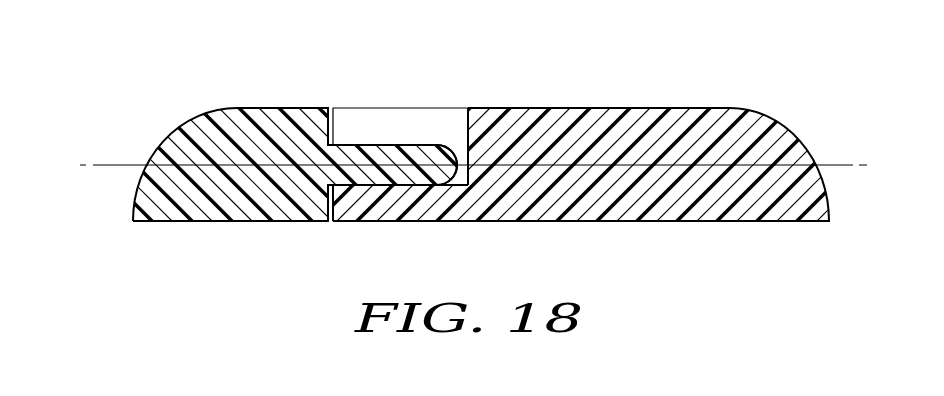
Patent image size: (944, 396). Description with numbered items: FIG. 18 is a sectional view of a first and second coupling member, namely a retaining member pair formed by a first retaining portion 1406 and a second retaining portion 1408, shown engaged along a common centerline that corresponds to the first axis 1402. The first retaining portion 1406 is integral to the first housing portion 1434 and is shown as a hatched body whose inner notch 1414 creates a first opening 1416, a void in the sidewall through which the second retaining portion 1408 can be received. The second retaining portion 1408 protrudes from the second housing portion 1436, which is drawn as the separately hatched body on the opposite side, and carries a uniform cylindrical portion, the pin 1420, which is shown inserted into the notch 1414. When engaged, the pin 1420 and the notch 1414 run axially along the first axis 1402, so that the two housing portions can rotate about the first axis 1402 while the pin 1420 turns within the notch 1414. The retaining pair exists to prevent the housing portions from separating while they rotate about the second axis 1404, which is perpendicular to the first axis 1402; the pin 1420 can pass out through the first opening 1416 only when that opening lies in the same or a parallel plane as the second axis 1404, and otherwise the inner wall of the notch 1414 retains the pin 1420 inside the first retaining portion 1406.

The first axis 1402 is at (113, 164).
The second axis 1404 is at (722, 165).
The first retaining portion 1406 is at (408, 192).
The second retaining portion 1408 is at (172, 143).
The notch 1414 is at (350, 117).
The first opening 1416 is at (453, 115).
The pin 1420 is at (408, 152).
The first housing portion 1434 is at (552, 108).
The second housing portion 1436 is at (130, 207).